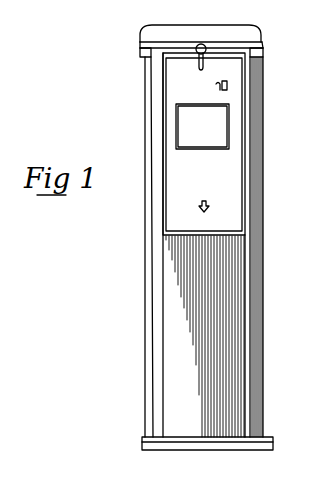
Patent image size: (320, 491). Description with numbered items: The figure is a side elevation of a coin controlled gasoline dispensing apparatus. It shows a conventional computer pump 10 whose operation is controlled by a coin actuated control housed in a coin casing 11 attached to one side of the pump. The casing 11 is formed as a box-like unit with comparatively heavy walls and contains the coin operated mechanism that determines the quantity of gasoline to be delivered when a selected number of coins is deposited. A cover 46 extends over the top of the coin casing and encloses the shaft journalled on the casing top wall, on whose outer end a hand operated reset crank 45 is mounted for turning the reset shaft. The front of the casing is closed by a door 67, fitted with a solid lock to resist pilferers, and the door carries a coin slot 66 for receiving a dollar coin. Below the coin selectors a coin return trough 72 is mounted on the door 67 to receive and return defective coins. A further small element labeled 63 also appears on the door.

The computer pump 10 is at (257, 39).
The coin casing 11 is at (169, 346).
The hand operated reset crank 45 is at (198, 68).
The cover 46 is at (239, 43).
The coin return lever 63 is at (215, 85).
The coin slot 66 is at (226, 78).
The door 67 is at (220, 177).
The coin return trough 72 is at (208, 211).